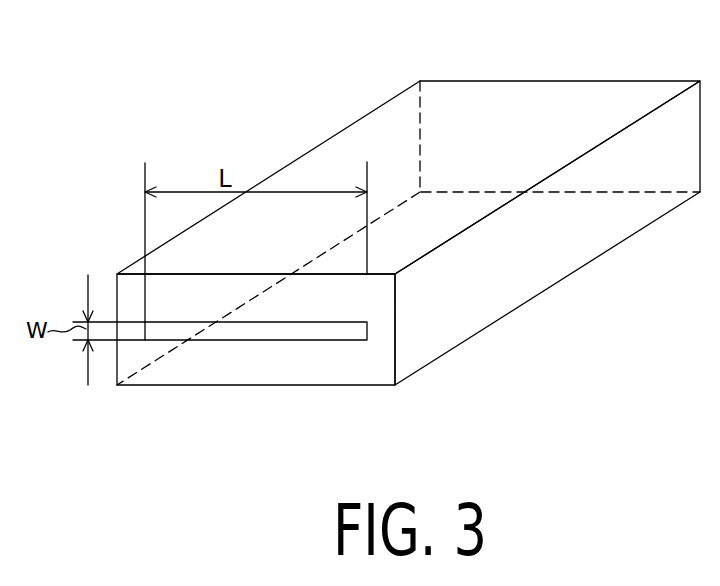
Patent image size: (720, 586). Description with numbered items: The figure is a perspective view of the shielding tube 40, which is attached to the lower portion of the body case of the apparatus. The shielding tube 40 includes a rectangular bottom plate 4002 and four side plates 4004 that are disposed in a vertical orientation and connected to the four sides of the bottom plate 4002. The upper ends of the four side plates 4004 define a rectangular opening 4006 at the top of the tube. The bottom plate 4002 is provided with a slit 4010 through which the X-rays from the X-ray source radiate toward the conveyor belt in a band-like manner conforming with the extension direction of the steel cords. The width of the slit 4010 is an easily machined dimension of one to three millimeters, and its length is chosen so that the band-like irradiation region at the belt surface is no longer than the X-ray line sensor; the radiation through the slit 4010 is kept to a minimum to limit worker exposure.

The shielding tube 40 is at (407, 241).
The bottom plate 4002 is at (260, 365).
The side plates 4004 is at (535, 162).
The rectangular opening 4006 is at (515, 126).
The slit 4010 is at (247, 330).